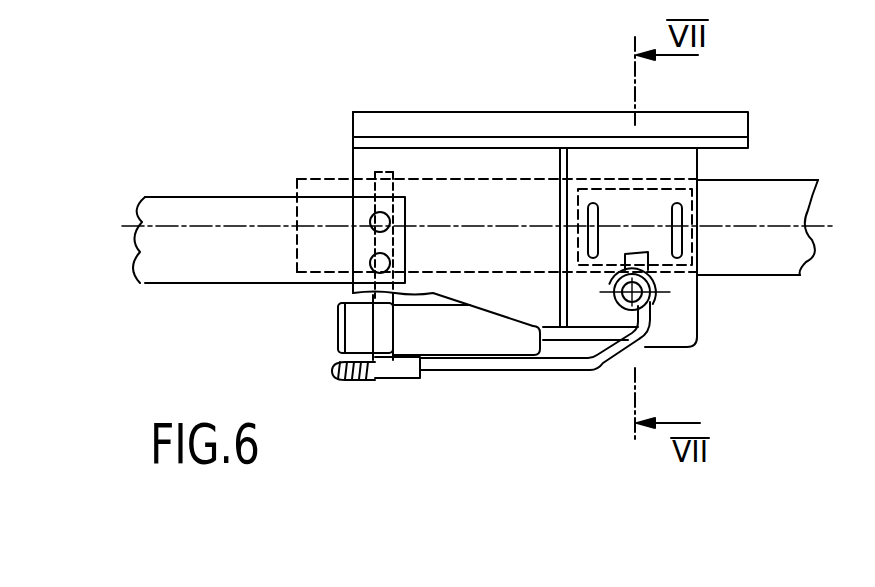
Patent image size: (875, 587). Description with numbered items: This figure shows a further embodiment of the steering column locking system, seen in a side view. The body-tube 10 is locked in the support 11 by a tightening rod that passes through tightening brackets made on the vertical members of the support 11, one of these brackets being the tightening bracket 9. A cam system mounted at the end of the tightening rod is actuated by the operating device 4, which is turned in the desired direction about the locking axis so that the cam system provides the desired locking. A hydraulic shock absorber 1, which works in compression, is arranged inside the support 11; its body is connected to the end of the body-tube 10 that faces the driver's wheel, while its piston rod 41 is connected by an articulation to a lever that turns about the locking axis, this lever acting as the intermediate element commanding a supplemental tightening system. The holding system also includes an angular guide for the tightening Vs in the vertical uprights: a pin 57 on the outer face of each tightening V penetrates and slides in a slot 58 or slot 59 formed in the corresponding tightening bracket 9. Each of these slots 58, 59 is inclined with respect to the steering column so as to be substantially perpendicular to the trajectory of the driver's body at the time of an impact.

The hydraulic shock absorber 1 is at (453, 342).
The operating device 4 is at (523, 363).
The tightening bracket 9 is at (606, 163).
The body-tube 10 is at (790, 203).
The support 11 is at (465, 162).
The piston rod 41 is at (575, 337).
The pin 57 is at (677, 232).
The slot 58 is at (685, 210).
The slot 59 is at (677, 230).